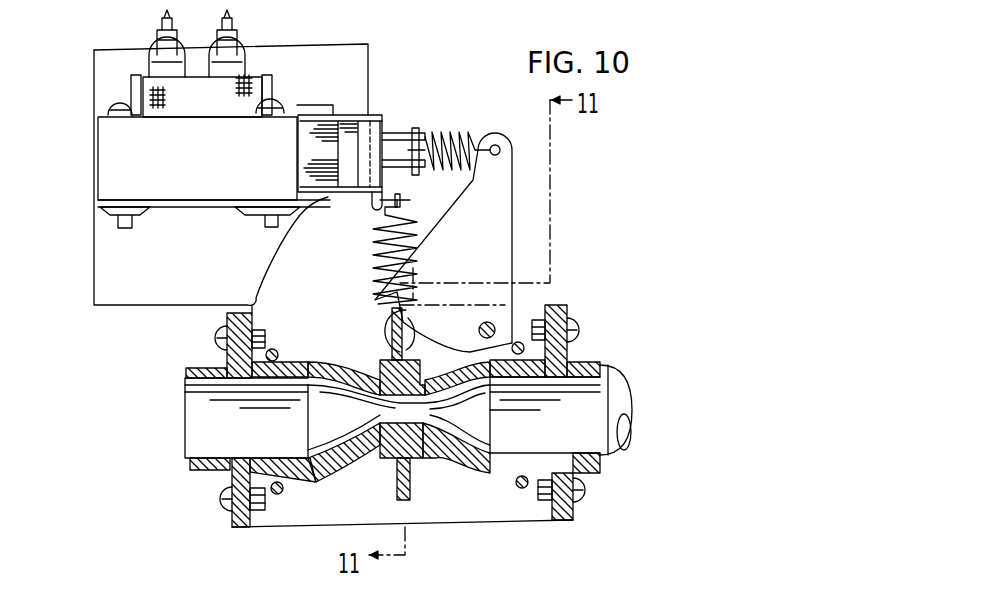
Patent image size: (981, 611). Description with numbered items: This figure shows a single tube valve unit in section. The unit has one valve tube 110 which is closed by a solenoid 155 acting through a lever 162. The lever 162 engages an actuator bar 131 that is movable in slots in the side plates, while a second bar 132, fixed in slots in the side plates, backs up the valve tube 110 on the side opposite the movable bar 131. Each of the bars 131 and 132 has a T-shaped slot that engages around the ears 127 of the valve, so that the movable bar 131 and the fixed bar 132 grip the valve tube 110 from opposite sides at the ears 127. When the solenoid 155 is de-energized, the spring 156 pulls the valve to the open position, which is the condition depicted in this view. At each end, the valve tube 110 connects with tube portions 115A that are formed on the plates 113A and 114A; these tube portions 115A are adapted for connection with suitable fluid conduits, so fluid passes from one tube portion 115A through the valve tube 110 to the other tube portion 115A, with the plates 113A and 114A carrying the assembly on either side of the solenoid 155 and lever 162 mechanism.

The solenoid 155 is at (90, 114).
The lever 162 is at (497, 238).
The spring 156 is at (377, 262).
The actuator bar 131 is at (387, 330).
The ears of the valve 127 is at (413, 363).
The bar 132 is at (395, 486).
The valve tube 110 is at (453, 458).
The tube portion 115A is at (208, 465).
The plate 113A is at (237, 528).
The plate 114A is at (563, 522).